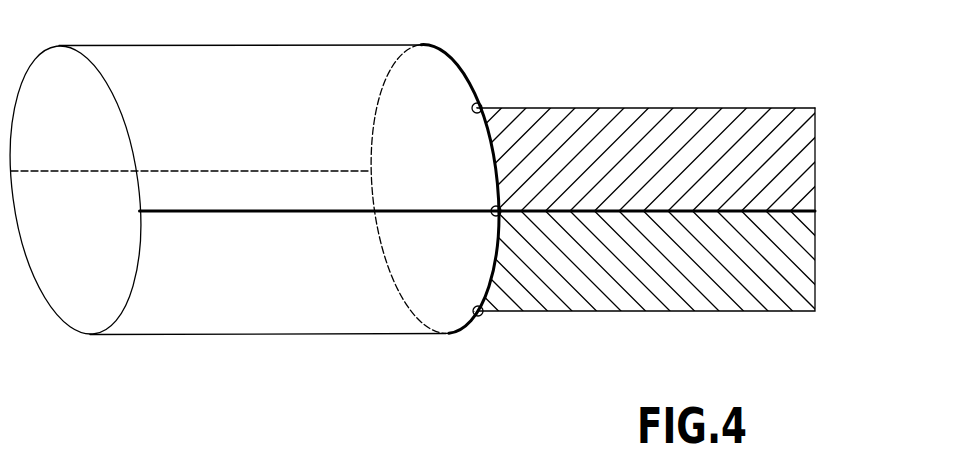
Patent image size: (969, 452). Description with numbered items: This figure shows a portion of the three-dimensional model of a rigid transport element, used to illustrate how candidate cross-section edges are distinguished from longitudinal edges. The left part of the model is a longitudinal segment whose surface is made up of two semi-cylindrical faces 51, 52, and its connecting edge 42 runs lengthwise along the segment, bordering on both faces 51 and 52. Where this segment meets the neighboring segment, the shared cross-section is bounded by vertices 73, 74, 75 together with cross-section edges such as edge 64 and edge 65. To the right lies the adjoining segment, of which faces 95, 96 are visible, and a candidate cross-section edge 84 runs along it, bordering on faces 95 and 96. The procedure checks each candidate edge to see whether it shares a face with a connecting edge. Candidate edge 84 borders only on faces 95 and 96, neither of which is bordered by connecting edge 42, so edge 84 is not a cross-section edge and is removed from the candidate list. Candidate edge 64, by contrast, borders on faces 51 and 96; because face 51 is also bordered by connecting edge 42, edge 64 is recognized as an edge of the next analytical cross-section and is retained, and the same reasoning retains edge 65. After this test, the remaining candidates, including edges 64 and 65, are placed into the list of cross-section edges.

The face 51 is at (286, 102).
The face 52 is at (332, 298).
The connecting edge 42 is at (253, 213).
The candidate cross-section edge 64 is at (494, 152).
The vertex 73 is at (481, 104).
The vertex 75 is at (482, 316).
The vertex 74 is at (535, 162).
The candidate cross-section edge 84 is at (697, 203).
The face 96 is at (760, 150).
The cross-section edge 65 is at (500, 262).
The face 95 is at (757, 262).